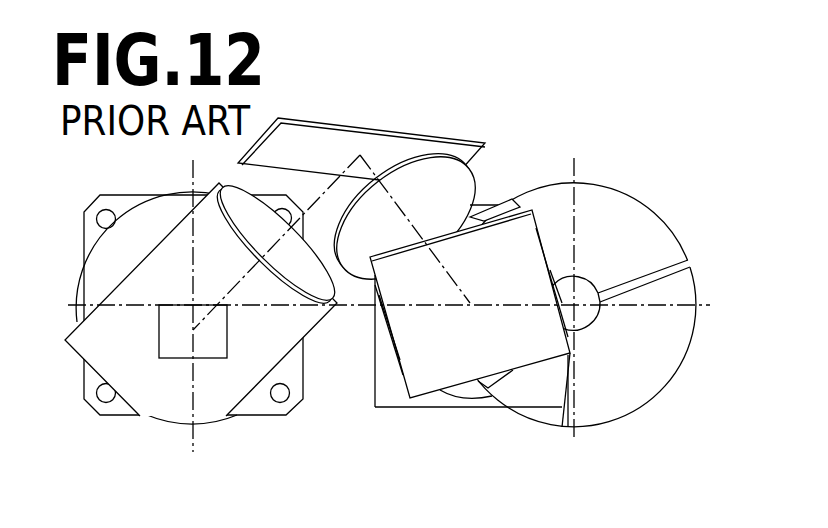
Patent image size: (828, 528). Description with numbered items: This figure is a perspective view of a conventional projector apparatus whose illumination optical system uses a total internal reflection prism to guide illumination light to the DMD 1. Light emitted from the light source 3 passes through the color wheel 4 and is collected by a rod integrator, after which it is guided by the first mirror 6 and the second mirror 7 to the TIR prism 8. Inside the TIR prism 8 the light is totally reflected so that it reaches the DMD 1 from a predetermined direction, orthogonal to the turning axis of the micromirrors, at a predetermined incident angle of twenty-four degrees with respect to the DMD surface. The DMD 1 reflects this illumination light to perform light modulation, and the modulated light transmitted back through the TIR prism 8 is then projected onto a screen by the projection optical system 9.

The DMD 1 is at (212, 347).
The light source 3 is at (468, 388).
The color wheel 4 is at (645, 217).
The first mirror 6 is at (425, 378).
The second mirror 7 is at (318, 138).
The TIR prism 8 is at (247, 372).
The projection optical system 9 is at (152, 228).